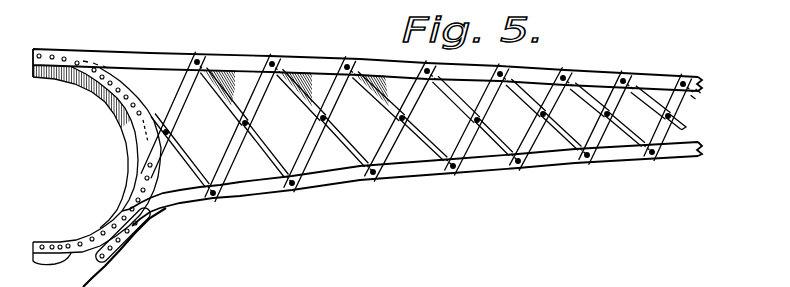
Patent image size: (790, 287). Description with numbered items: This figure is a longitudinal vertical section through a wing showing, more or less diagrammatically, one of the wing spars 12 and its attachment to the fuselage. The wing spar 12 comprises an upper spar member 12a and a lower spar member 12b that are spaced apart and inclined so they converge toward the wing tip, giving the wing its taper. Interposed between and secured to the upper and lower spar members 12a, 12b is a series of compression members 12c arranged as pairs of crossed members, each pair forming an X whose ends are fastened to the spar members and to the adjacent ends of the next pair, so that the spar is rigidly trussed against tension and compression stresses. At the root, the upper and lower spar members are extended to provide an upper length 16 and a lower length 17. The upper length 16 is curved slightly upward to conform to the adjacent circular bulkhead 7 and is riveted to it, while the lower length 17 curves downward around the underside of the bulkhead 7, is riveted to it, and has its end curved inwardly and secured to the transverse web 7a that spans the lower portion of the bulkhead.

The bulkhead 7 is at (128, 142).
The transverse web 7a is at (43, 240).
The wing spar 12 is at (378, 160).
The upper spar member 12a is at (302, 64).
The lower spar member 12b is at (441, 172).
The compression member 12c is at (200, 122).
The upper length 16 is at (60, 55).
The lower length 17 is at (118, 255).